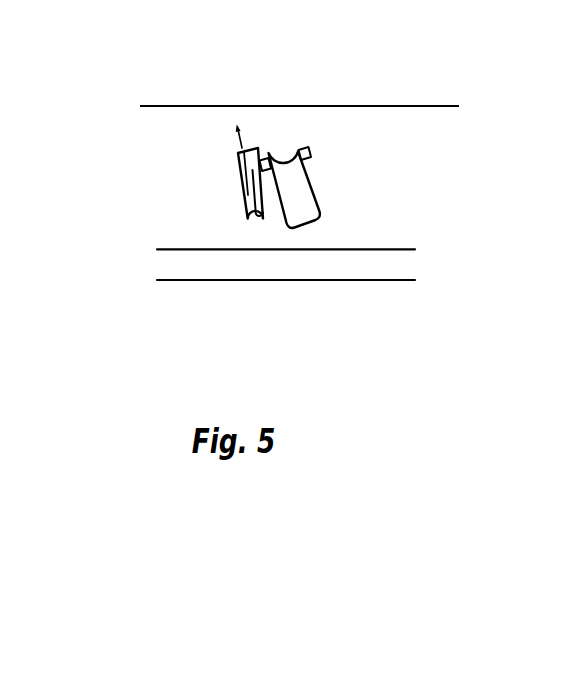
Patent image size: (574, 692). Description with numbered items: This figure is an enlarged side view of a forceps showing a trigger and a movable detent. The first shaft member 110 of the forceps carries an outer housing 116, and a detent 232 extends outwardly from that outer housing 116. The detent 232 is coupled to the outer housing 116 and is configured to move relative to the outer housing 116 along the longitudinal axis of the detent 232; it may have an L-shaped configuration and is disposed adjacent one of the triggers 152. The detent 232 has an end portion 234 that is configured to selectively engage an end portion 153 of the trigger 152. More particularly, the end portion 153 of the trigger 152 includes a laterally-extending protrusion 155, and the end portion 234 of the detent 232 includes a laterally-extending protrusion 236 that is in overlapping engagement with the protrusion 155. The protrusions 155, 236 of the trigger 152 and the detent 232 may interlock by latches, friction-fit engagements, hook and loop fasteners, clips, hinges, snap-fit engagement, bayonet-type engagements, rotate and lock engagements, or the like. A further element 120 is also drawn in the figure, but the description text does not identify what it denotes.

The first shaft member 110 is at (196, 104).
The outer housing 116 is at (388, 110).
The base plate 120 is at (255, 252).
The trigger 152 is at (312, 174).
The end portion of trigger 153 is at (290, 148).
The laterally-extending protrusion 155 is at (278, 157).
The detent 232 is at (238, 178).
The end portion of detent 234 is at (240, 154).
The laterally-extending protrusion 236 is at (255, 147).